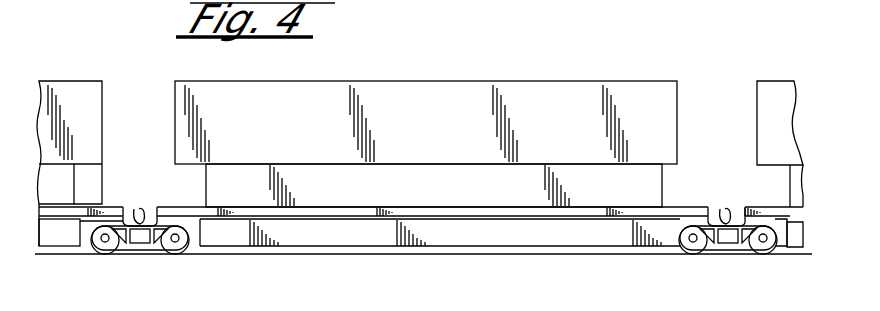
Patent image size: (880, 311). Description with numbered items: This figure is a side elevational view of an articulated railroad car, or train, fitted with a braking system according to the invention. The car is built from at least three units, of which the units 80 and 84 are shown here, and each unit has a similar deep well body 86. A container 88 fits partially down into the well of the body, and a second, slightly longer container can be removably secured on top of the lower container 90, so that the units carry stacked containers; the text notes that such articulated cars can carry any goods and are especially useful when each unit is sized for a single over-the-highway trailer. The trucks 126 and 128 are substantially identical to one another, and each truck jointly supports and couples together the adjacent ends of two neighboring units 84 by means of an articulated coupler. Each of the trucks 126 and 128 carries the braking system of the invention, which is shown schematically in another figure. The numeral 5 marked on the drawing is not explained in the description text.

The end section of car deck 5 is at (68, 210).
The unit 80 is at (61, 262).
The unit 84 is at (381, 254).
The deep well body 86 is at (469, 234).
The container 88 is at (65, 177).
The lower container 90 is at (78, 88).
The truck 126 is at (137, 262).
The truck 128 is at (728, 268).